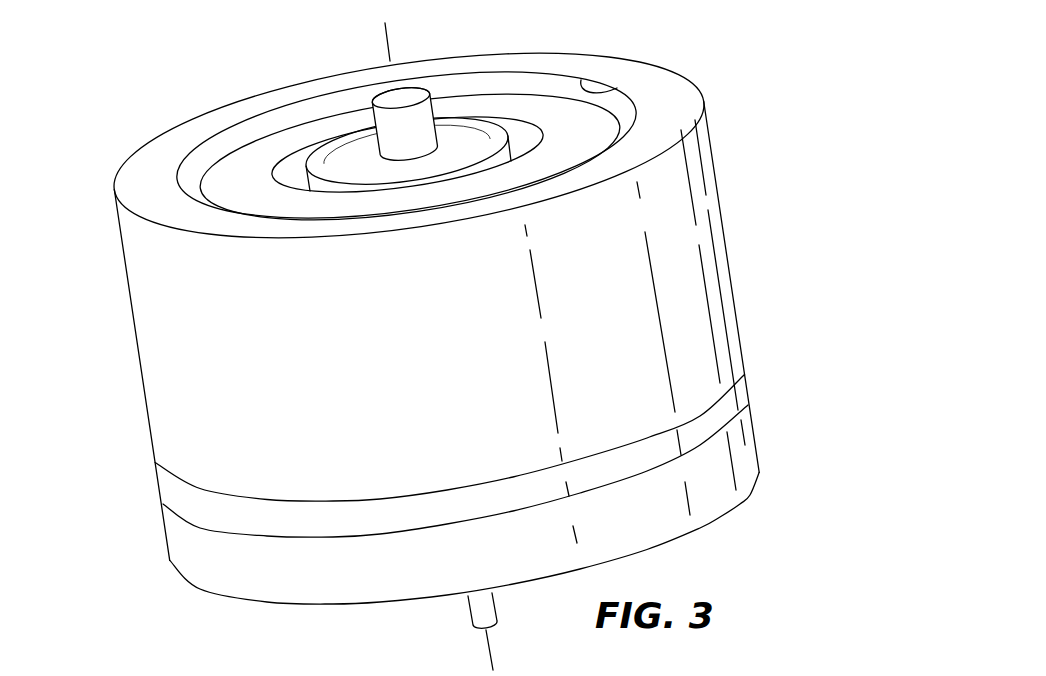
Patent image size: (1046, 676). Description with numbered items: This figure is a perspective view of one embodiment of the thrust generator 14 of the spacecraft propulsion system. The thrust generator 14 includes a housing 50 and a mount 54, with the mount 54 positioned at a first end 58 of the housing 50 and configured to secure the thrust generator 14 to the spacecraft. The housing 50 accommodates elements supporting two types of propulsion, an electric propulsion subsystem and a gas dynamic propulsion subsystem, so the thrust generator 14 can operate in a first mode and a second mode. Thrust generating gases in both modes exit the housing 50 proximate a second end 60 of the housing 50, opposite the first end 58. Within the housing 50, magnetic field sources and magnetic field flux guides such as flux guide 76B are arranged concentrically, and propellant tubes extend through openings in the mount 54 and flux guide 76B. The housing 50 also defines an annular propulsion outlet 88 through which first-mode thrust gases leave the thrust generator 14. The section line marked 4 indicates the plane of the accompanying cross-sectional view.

The thrust generator 14 is at (123, 107).
The housing 50 is at (190, 318).
The mount 54 is at (237, 568).
The first end 58 is at (197, 490).
The second end 60 is at (118, 170).
The magnetic field flux guide 76B is at (698, 430).
The annular propulsion outlet 88 is at (605, 92).
The section line 4- 4 is at (376, 47).